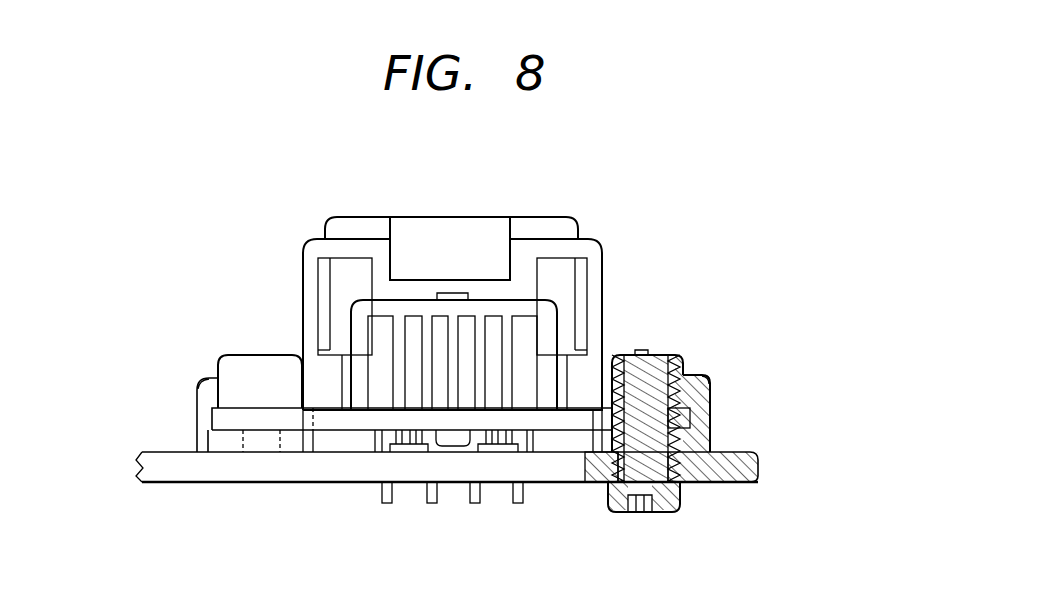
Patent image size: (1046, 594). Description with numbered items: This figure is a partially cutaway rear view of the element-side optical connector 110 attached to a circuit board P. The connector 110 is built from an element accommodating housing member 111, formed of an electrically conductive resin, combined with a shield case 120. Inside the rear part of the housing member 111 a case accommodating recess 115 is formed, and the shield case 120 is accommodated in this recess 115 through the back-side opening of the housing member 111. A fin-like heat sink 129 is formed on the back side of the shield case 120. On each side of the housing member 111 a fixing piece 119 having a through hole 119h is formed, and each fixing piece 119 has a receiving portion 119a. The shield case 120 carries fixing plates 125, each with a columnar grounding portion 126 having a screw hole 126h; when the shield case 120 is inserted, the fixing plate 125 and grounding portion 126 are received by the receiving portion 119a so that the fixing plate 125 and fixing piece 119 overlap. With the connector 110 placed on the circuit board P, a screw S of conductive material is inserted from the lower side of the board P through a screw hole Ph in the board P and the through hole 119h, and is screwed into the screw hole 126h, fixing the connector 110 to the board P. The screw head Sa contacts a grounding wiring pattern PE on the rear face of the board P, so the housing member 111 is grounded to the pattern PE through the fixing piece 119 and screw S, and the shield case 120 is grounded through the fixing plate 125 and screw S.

The element-side optical connector 110 is at (459, 176).
The element accommodating housing member 111 is at (598, 243).
The case accommodating recess 115 is at (473, 307).
The shield case 120 is at (427, 300).
The heat sink 129 is at (462, 397).
The grounding portion 126 is at (263, 354).
The screw hole 126h is at (650, 353).
The fixing piece 119 is at (196, 430).
The receiving portion 119a is at (197, 388).
The through hole 119h is at (683, 488).
The fixing plate 125 is at (267, 420).
The circuit board P is at (185, 470).
The grounding wiring pattern PE is at (712, 483).
The screw S is at (632, 350).
The screw head Sa is at (608, 503).
The screw hole Ph is at (645, 508).